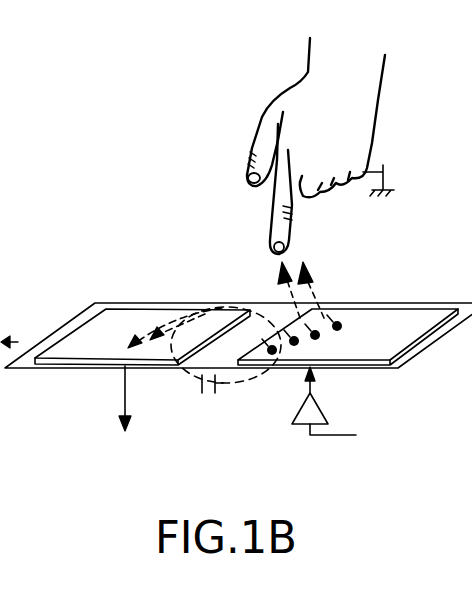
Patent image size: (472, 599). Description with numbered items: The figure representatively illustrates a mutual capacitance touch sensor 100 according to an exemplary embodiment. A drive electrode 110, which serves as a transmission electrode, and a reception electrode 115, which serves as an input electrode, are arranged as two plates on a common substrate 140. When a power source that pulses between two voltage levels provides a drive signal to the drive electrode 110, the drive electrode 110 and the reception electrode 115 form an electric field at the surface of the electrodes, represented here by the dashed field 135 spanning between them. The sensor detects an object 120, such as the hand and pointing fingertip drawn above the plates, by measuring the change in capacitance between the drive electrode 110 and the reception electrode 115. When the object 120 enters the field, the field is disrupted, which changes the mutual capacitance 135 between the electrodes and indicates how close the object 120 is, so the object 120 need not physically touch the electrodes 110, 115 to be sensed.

The touch sensing system 100 is at (81, 217).
The drive electrode 110 is at (380, 349).
The reception electrode 115 is at (86, 351).
The object 120 is at (372, 146).
The mutual capacitance 135 is at (205, 395).
The substrate 140 is at (437, 301).